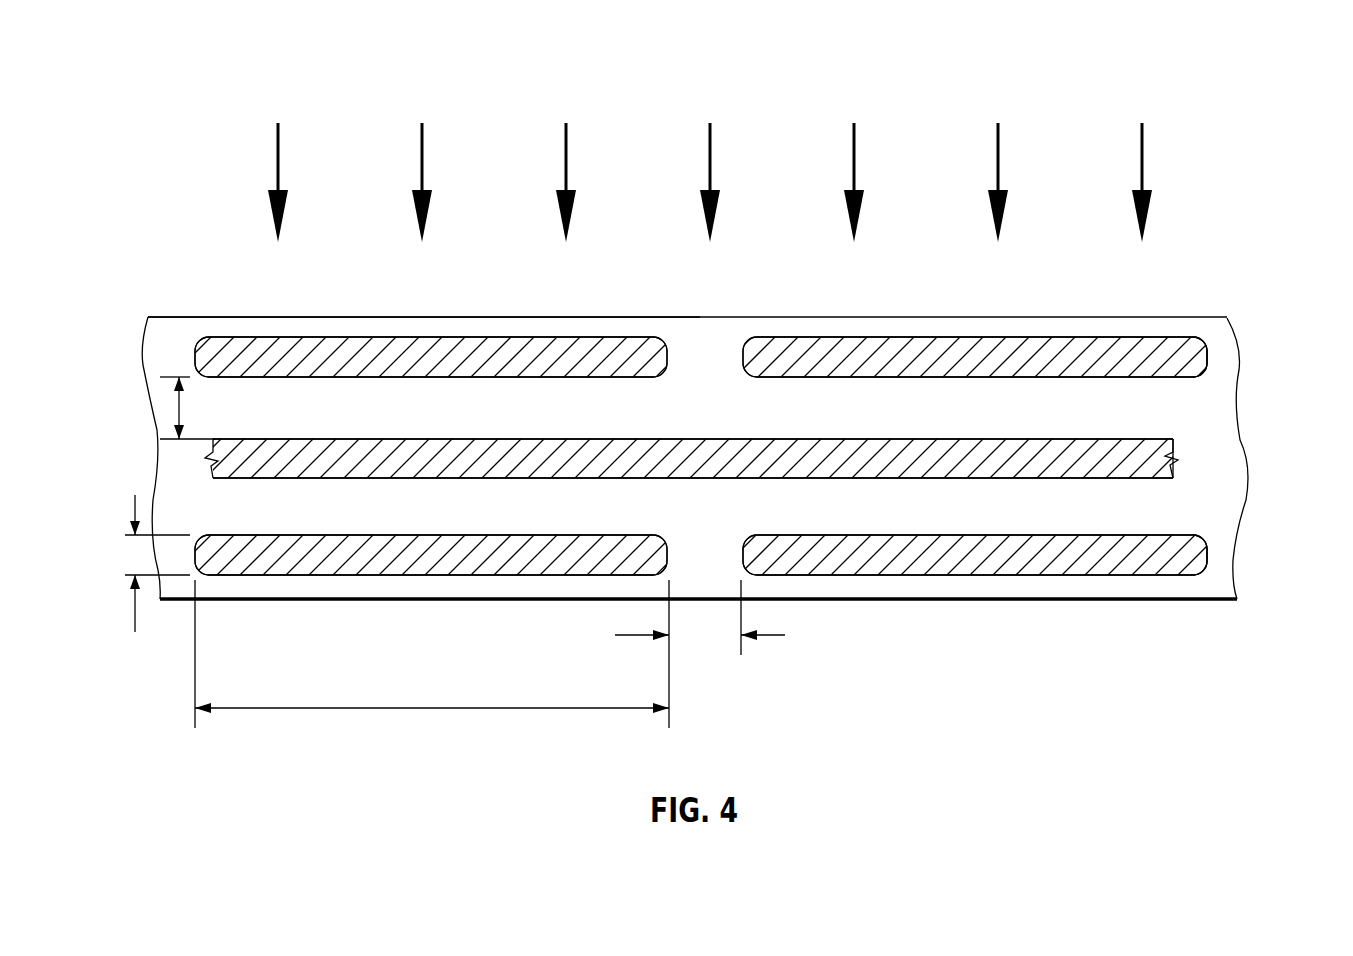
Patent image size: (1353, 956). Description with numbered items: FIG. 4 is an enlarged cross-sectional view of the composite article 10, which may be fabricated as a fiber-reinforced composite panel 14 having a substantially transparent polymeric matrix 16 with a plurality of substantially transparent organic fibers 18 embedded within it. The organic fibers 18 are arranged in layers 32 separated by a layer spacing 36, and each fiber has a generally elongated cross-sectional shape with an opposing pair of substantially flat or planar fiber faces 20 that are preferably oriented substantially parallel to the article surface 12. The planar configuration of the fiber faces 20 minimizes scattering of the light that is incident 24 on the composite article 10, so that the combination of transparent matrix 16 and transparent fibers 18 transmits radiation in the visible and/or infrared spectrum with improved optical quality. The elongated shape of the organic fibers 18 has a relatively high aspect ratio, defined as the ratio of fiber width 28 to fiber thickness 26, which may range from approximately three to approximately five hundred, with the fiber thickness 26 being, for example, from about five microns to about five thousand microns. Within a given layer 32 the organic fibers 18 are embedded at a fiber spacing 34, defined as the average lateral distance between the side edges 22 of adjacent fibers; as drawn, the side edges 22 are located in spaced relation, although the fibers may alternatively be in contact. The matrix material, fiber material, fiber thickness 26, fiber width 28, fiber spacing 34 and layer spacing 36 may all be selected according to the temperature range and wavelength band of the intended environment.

The composite article 10 is at (1225, 318).
The article surface 12 is at (1153, 318).
The fiber-reinforced composite panel 14 is at (170, 278).
The polymeric matrix 16 is at (174, 494).
The organic fibers 18 is at (918, 355).
The fiber faces 20 is at (1080, 338).
The side edges 22 is at (667, 558).
The incident radiation 24 is at (280, 157).
The fiber thickness 26 is at (152, 578).
The fiber width 28 is at (432, 664).
The layers 32 is at (1182, 355).
The fiber spacing 34 is at (645, 635).
The layer spacing 36 is at (170, 410).